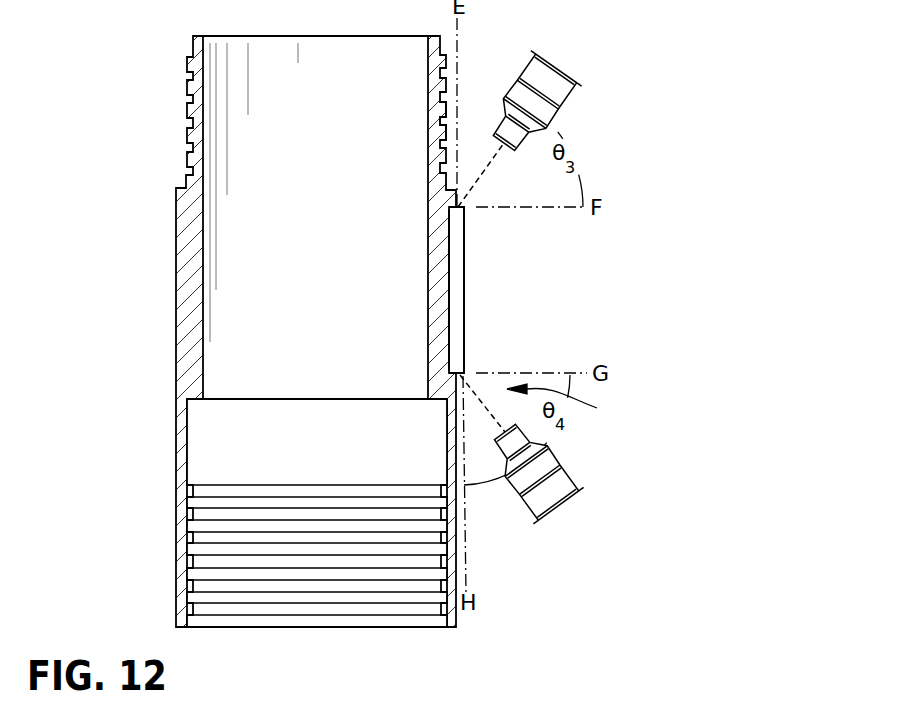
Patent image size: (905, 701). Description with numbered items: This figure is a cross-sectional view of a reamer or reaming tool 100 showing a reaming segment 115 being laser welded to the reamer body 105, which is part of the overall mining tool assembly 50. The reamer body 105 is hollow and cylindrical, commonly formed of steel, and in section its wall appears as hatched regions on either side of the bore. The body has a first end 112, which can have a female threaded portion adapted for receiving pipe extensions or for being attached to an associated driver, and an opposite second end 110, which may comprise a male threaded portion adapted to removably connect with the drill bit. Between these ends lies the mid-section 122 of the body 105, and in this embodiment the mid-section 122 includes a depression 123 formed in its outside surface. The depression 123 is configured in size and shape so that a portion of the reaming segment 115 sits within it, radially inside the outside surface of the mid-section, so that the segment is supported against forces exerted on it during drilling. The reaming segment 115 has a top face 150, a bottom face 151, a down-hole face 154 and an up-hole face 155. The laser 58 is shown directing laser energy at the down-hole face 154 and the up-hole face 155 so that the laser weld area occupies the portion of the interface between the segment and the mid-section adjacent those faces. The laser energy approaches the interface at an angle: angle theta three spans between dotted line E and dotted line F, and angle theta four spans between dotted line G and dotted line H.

The device assembly 50 is at (389, 689).
The laser 58 is at (522, 72).
The reaming tool 100 is at (570, 403).
The reamer body 105 is at (177, 442).
The second end 110 is at (448, 110).
The first end 112 is at (282, 528).
The reaming segment 115 is at (458, 292).
The mid-section 122 is at (177, 262).
The depression 123 is at (448, 323).
The top face 150 is at (465, 228).
The bottom face 151 is at (447, 258).
The down-hole face 154 is at (465, 206).
The up-hole face 155 is at (461, 376).